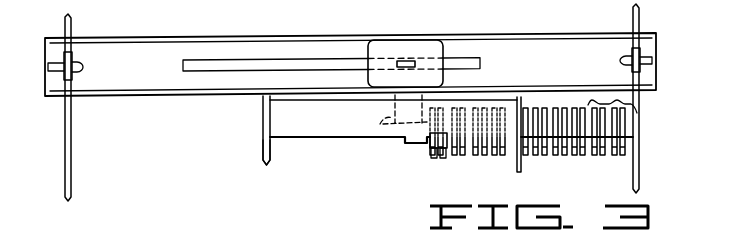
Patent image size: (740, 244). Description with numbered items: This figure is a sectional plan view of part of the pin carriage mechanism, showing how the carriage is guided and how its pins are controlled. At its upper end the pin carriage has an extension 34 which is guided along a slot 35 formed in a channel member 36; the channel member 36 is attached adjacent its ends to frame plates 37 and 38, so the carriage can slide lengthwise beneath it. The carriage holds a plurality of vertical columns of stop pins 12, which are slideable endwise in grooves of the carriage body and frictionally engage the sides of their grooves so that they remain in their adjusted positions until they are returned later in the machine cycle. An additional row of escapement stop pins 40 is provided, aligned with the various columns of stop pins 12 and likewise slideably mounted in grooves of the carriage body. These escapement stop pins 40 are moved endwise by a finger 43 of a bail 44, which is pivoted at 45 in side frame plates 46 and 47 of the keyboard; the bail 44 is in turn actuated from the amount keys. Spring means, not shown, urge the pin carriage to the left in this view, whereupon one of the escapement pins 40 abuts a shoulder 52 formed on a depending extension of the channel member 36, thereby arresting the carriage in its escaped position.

The stop pins 12 is at (565, 154).
The extension 34 is at (417, 63).
The slot 35 is at (248, 60).
The channel member 36 is at (573, 37).
The frame plate 37 is at (72, 121).
The frame plate 38 is at (639, 156).
The escapement stop pins 40 is at (637, 113).
The finger 43 is at (432, 149).
The bail 44 is at (360, 134).
The pivot 45 is at (263, 120).
The side frame plate 46 is at (521, 168).
The side frame plate 47 is at (263, 152).
The shoulder 52 is at (428, 129).